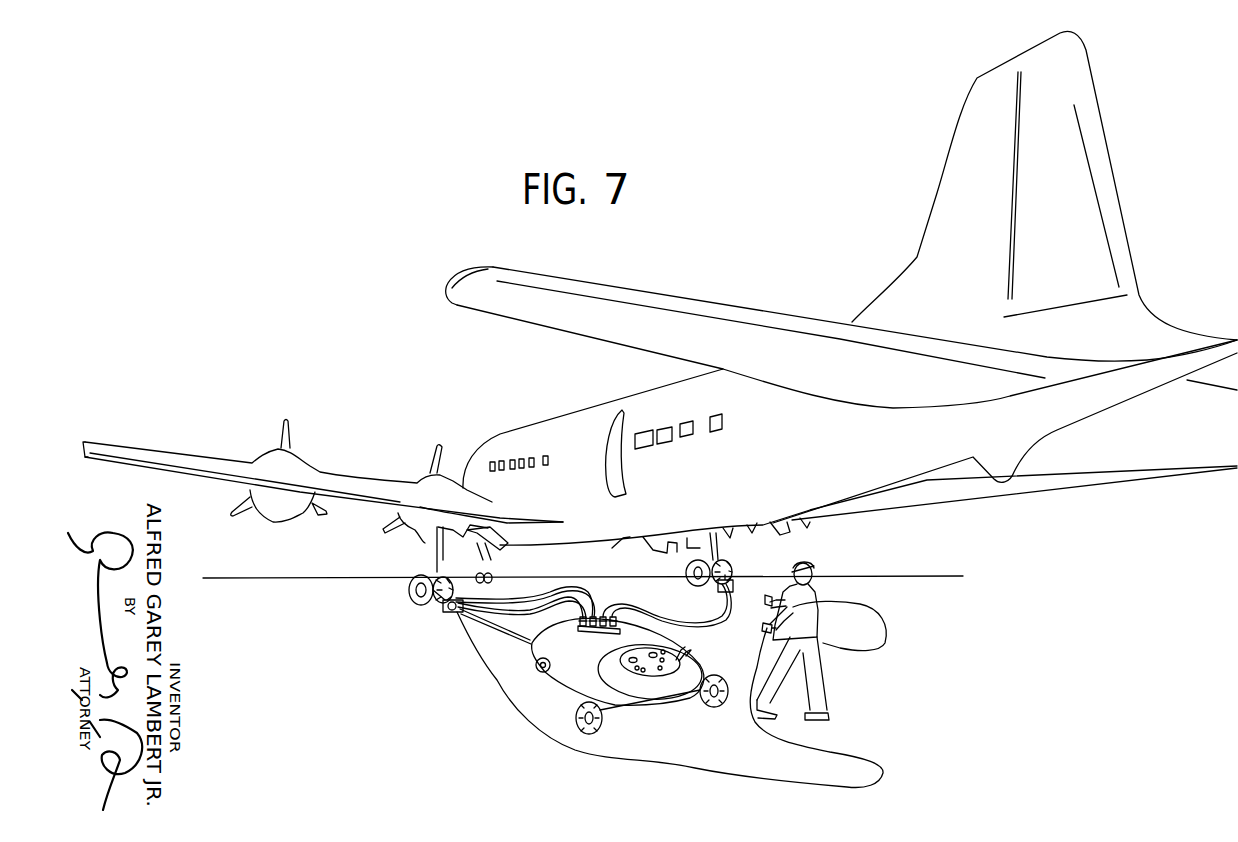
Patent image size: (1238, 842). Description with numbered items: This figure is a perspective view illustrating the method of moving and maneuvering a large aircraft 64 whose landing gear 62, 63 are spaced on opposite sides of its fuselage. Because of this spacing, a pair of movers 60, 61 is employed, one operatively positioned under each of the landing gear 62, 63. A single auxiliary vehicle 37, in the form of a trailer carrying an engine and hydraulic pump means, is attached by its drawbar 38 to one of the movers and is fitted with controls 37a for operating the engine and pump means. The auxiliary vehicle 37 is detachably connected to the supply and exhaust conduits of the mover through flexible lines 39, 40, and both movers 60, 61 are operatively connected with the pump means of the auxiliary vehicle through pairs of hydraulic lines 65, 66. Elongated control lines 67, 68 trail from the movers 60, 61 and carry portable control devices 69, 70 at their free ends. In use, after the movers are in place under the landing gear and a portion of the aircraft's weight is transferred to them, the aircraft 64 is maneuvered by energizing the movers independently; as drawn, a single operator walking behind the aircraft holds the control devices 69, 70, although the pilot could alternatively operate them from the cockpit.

The auxiliary vehicle 37 is at (630, 676).
The controls 37a is at (657, 675).
The drawbar 38 is at (518, 637).
The flexible line 39 is at (498, 592).
The flexible line 40 is at (588, 612).
The mover 60 is at (450, 612).
The mover 61 is at (718, 588).
The landing gear 62 is at (412, 568).
The landing gear 63 is at (720, 568).
The aircraft 64 is at (660, 318).
The hydraulic lines 65 is at (570, 602).
The hydraulic lines 66 is at (640, 590).
The control line 67 is at (522, 720).
The control line 68 is at (860, 650).
The portable control device 69 is at (763, 627).
The portable control device 70 is at (765, 593).